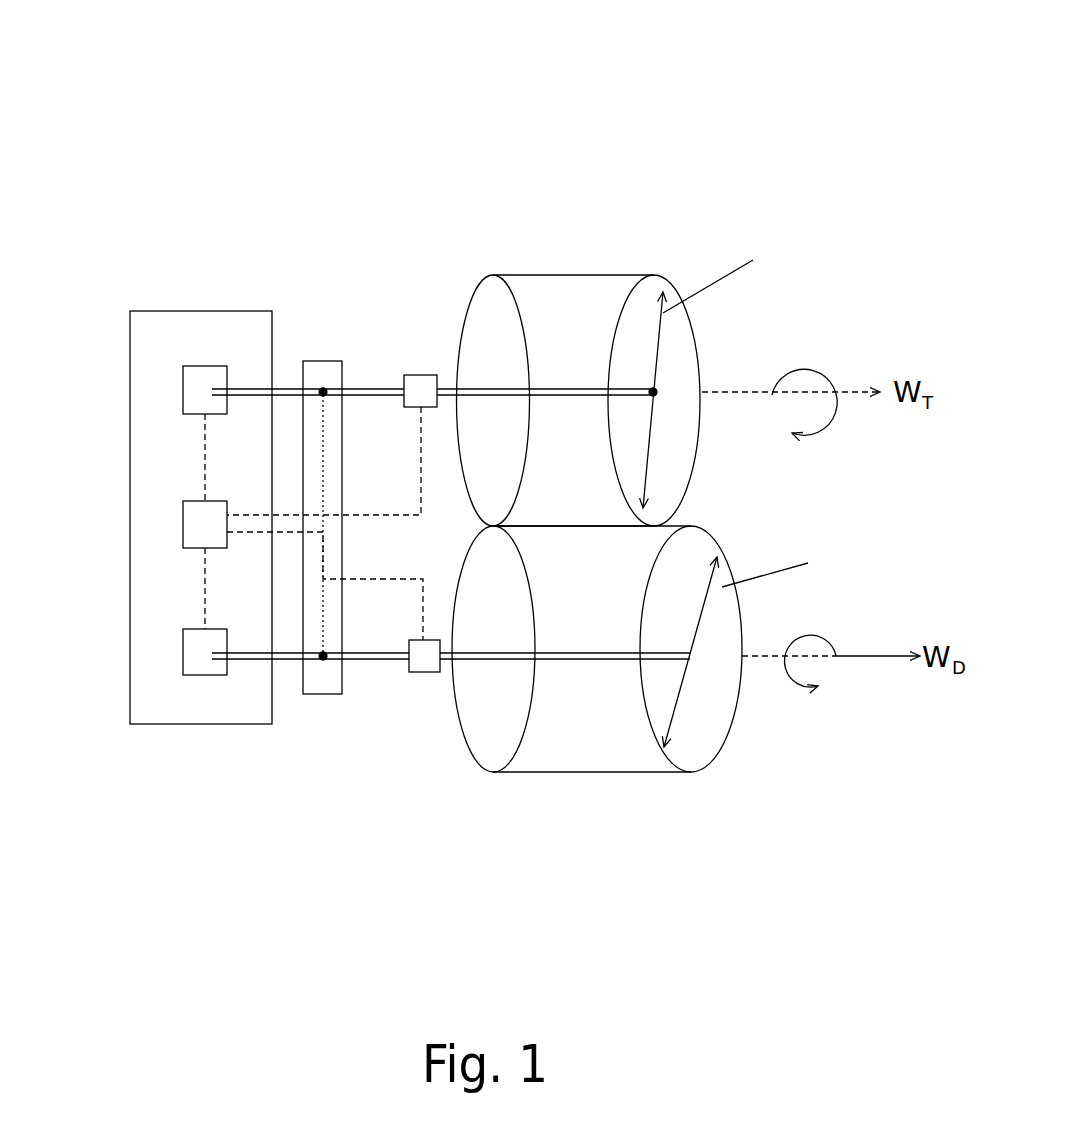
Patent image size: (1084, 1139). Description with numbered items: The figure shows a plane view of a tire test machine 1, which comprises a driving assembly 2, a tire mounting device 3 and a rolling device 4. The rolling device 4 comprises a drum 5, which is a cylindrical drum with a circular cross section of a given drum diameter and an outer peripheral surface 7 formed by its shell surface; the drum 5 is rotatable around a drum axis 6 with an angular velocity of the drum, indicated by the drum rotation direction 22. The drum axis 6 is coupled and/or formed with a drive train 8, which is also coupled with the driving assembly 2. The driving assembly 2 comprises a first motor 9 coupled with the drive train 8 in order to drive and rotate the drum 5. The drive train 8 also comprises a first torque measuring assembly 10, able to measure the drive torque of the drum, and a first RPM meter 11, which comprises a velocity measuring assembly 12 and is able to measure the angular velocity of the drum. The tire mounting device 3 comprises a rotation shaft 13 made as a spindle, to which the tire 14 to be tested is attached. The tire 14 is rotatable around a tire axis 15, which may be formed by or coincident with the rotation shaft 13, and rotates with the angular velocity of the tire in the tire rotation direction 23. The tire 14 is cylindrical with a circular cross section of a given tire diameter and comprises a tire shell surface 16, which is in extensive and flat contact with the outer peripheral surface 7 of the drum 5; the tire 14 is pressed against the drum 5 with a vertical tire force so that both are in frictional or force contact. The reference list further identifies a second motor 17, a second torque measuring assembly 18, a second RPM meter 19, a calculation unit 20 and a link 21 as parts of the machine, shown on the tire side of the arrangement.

The tire test machine 1 is at (225, 87).
The driving assembly 2 is at (153, 311).
The tire mounting device 3 is at (639, 316).
The rolling device 4 is at (636, 700).
The drum 5 is at (708, 747).
The drum axis 6 is at (550, 663).
The outer peripheral surface 7 is at (607, 728).
The drive train 8 is at (376, 660).
The first motor 9 is at (205, 655).
The first torque measuring assembly 10 is at (416, 665).
The first RPM meter 11 is at (323, 660).
The velocity measuring assembly 12 is at (310, 558).
The rotation shaft 13 is at (454, 384).
The tire 14 is at (658, 275).
The tire axis 15 is at (655, 391).
The tire shell surface 16 is at (565, 305).
The second motor 17 is at (182, 402).
The second torque measuring assembly 18 is at (413, 375).
The second RPM meter 19 is at (326, 391).
The calculation unit 20 is at (192, 517).
The link 21 is at (269, 513).
The drum rotation direction 22 is at (817, 690).
The tire rotation direction 23 is at (735, 392).